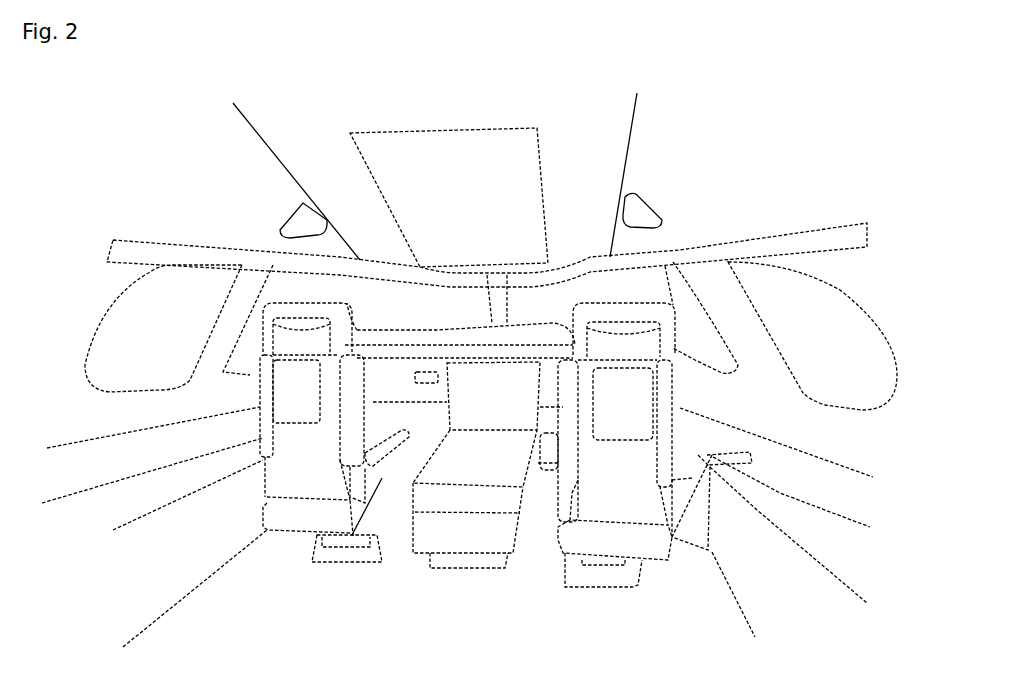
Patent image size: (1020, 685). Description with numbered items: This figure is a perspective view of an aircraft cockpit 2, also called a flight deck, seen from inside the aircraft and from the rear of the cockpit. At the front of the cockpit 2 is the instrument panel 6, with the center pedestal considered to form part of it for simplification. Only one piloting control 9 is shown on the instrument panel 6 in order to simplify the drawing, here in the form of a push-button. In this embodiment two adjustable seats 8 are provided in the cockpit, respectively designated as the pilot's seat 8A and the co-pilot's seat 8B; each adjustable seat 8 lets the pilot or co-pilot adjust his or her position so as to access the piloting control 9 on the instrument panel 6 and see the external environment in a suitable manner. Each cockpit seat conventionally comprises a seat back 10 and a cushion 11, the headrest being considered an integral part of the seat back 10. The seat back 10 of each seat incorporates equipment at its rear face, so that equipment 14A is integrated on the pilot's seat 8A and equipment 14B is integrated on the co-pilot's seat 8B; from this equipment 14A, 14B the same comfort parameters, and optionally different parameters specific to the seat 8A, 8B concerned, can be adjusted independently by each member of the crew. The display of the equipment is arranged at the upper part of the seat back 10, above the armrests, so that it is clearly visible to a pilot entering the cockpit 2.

The cockpit 2 is at (123, 360).
The instrument panel 6 is at (407, 363).
The adjustable seat 8 is at (253, 377).
The pilot's seat 8A is at (264, 405).
The co-pilot's seat 8B is at (723, 351).
The piloting control 9 is at (432, 370).
The seat back 10 is at (347, 420).
The cushion 11 is at (378, 547).
The equipment 14A is at (303, 320).
The equipment 14B is at (633, 323).